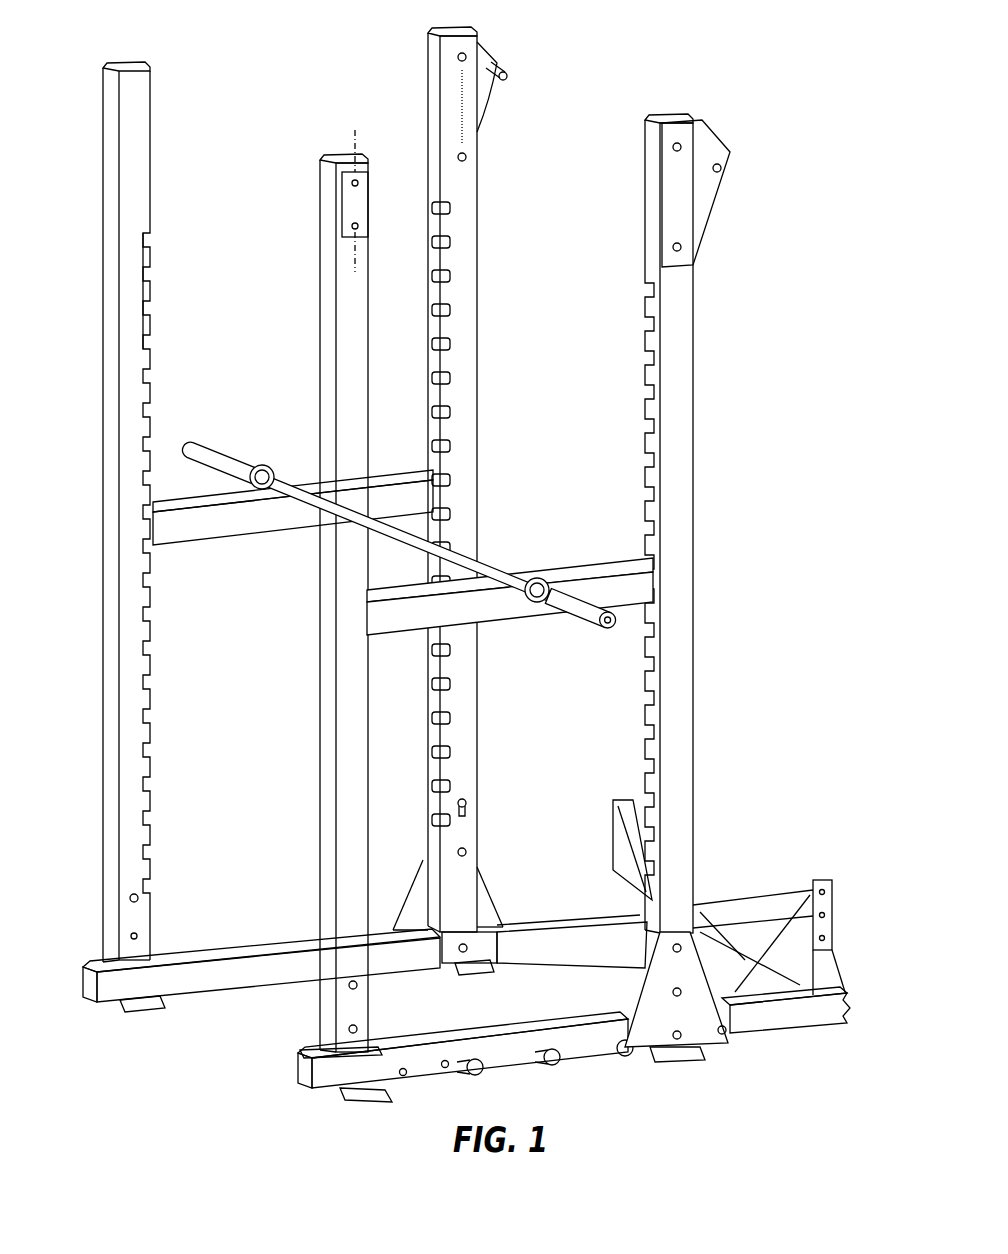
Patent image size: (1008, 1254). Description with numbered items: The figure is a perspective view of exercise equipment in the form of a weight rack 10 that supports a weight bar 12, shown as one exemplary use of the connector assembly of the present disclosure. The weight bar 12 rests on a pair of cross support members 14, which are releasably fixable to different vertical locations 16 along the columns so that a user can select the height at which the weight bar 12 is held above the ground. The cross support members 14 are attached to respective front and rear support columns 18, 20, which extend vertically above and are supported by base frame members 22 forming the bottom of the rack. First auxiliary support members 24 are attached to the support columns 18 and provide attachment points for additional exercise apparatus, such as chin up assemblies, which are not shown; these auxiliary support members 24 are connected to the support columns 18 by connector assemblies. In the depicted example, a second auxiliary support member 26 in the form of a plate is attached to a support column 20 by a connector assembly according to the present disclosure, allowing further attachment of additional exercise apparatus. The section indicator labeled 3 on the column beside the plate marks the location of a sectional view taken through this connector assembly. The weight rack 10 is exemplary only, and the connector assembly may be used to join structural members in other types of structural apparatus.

The weight rack 10 is at (849, 287).
The weight bar 12 is at (487, 567).
The cross support members 14 is at (270, 532).
The vertical locations 16 is at (158, 240).
The front support columns 18 is at (462, 387).
The rear support columns 20 is at (106, 591).
The base frame members 22 is at (198, 980).
The first auxiliary support members 24 is at (495, 58).
The second auxiliary support member 26 is at (355, 198).
The section line 3 is at (362, 150).